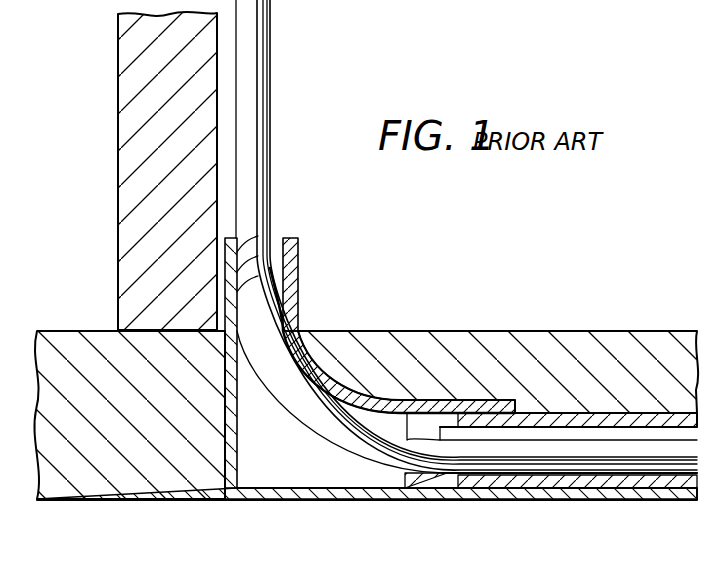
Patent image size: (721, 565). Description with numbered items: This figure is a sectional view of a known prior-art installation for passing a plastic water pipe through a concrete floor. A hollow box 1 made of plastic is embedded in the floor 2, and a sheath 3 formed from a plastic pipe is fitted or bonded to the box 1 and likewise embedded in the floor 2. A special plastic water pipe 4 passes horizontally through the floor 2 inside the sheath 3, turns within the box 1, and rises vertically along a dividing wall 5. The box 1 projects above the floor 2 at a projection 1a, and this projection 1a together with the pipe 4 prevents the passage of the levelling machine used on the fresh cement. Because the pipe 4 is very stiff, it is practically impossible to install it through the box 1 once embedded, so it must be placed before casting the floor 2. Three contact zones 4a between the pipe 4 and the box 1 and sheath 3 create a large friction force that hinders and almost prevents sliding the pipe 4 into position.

The hollow box 1 is at (370, 400).
The projection of box 1a is at (290, 270).
The floor 2 is at (442, 342).
The sheath 3 is at (594, 413).
The plastic water pipe 4 is at (267, 156).
The contact zones 4a is at (268, 266).
The dividing wall 5 is at (130, 226).